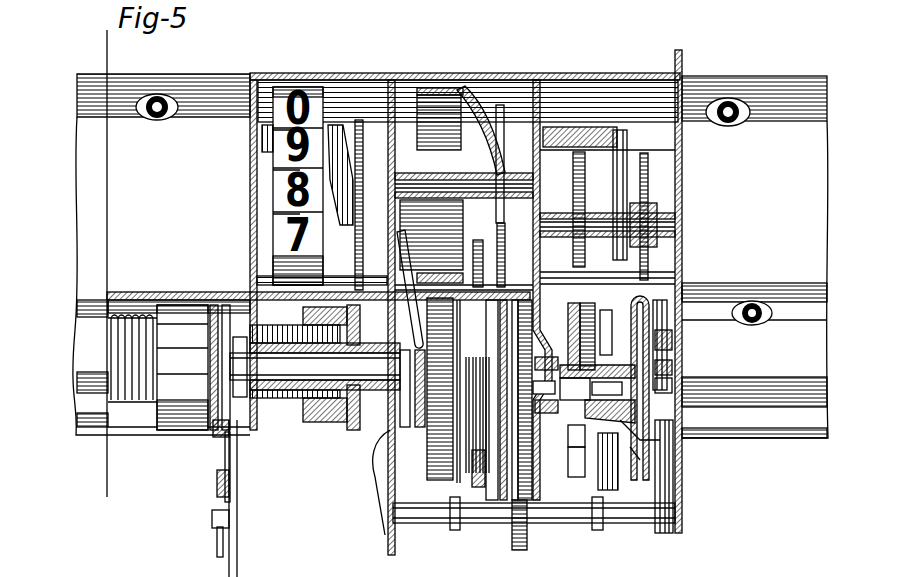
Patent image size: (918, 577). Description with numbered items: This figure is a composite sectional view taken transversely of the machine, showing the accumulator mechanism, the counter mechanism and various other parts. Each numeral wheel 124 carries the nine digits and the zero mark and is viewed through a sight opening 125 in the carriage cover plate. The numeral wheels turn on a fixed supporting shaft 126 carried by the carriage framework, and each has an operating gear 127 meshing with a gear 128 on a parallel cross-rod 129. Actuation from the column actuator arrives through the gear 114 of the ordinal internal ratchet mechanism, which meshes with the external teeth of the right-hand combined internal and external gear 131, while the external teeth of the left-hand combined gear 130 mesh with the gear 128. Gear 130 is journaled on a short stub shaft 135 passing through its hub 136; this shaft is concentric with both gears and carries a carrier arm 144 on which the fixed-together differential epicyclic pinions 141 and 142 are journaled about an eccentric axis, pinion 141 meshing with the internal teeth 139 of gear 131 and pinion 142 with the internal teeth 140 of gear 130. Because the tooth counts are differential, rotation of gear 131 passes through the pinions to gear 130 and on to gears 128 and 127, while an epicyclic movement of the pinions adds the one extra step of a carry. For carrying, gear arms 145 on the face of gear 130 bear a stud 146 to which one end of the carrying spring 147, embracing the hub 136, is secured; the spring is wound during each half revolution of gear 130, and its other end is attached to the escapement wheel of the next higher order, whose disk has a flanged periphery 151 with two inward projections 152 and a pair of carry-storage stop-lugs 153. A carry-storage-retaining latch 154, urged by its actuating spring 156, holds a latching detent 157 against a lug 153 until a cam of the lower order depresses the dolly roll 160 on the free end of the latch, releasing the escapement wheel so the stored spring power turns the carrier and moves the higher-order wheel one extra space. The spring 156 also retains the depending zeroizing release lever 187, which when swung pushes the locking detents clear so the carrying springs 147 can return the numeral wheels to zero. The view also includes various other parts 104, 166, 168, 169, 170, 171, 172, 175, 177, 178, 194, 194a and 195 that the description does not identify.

The bearing block 104 is at (477, 524).
The gear 114 is at (527, 540).
The numeral wheel 124 is at (262, 77).
The sight opening 125 is at (736, 102).
The fixed supporting shaft 126 is at (545, 158).
The operating gear 127 is at (353, 120).
The gear 128 is at (648, 183).
The cross-rod 129 is at (682, 221).
The combined internal and external gear 130 is at (516, 275).
The combined internal and external gear 131 is at (670, 290).
The stub shaft 135 is at (584, 390).
The hub 136 is at (620, 420).
The internal teeth 139 is at (675, 320).
The internal teeth 140 is at (685, 295).
The differential epicyclic pinion 141 is at (674, 385).
The differential epicyclic pinion 142 is at (674, 368).
The carrier arm 144 is at (590, 462).
The gear arms 145 is at (674, 340).
The projecting stud 146 is at (603, 320).
The carrying spring 147 is at (637, 440).
The flanged periphery 151 is at (463, 360).
The inward projections 152 is at (580, 445).
The carry-storage stop-lugs 153 is at (584, 303).
The carry-storage-retaining latch 154 is at (636, 306).
The actuating spring 156 is at (485, 186).
The latching detent 157 is at (608, 523).
The dolly roll 160 is at (392, 480).
The shaft 166 is at (672, 507).
The number wheel 168 is at (167, 423).
The clutch block 169 is at (330, 430).
The screw 170 is at (760, 318).
The bracket 171 is at (217, 434).
The bracket plate 172 is at (250, 421).
The spring 175 is at (118, 402).
The lever 177 is at (238, 548).
The rod 178 is at (225, 452).
The zeroizing release lever 187 is at (648, 170).
The plate 194 is at (243, 291).
The shaft 194a is at (352, 478).
The gear teeth 195 is at (250, 414).